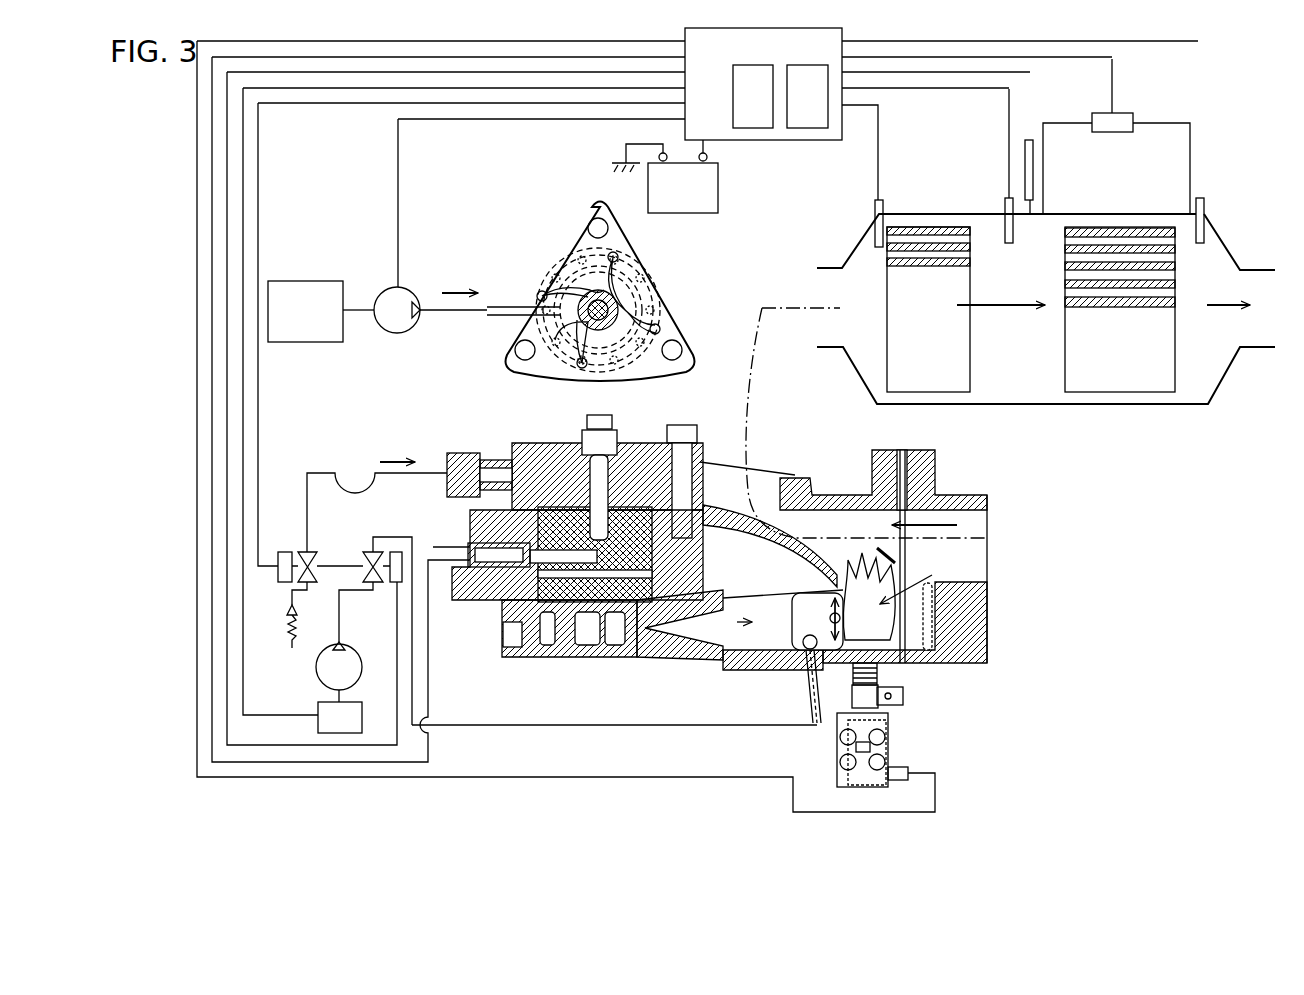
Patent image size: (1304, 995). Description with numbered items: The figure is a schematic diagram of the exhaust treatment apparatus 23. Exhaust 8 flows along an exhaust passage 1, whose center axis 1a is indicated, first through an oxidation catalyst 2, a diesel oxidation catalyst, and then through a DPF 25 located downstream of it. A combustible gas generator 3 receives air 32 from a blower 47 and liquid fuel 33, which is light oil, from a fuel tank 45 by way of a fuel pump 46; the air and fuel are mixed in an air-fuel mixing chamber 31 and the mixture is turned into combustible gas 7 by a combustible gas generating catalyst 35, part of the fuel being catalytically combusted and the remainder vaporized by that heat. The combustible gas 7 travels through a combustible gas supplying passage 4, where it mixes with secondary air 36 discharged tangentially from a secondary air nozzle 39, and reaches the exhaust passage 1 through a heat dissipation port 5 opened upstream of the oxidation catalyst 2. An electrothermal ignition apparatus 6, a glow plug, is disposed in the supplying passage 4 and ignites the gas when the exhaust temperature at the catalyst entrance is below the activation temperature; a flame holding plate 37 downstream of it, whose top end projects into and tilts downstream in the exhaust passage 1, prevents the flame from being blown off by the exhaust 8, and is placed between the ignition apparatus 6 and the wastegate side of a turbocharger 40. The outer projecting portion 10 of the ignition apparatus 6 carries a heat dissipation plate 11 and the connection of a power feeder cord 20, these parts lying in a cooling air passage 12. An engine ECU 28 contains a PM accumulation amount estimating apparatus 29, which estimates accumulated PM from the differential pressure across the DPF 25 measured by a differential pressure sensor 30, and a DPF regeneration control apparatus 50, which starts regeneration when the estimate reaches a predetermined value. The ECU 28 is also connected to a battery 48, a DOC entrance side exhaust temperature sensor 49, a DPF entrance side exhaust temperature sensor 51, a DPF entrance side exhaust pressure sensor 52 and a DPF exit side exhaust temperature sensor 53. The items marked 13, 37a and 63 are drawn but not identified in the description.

The exhaust passage 1 is at (1046, 362).
The center axis of the exhaust passage 1a is at (988, 540).
The oxidation catalyst 2 is at (926, 380).
The combustible gas generator 3 is at (510, 435).
The combustible gas supplying passage 4 is at (762, 655).
The heat dissipation port 5 is at (842, 578).
The electrothermal ignition apparatus 6 is at (916, 578).
The combustible gas 7 is at (840, 595).
The exhaust 8 is at (1005, 315).
The outer projecting portion 10 is at (890, 735).
The heat dissipation plate 11 is at (835, 750).
The cooling air passage 12 is at (1003, 752).
The glow plug 13 is at (888, 681).
The power feeder cord 20 is at (935, 800).
The exhaust treatment apparatus 23 is at (638, 665).
The DPF 25 is at (1126, 375).
The engine ECU 28 is at (822, 84).
The PM accumulation amount estimating apparatus 29 is at (745, 88).
The differential pressure sensor 30 is at (1114, 128).
The air-fuel mixing chamber 31 is at (590, 290).
The air 32 is at (400, 448).
The liquid fuel 33 is at (465, 290).
The combustible gas generating catalyst 35 is at (632, 562).
The secondary air 36 is at (808, 593).
The flame holding plate 37 is at (906, 560).
The fuel injection port 37a is at (877, 548).
The secondary air nozzle 39 is at (806, 665).
The turbocharger 40 is at (975, 665).
The fuel tank 45 is at (292, 340).
The fuel pump 46 is at (405, 328).
The blower 47 is at (318, 668).
The battery 48 is at (690, 200).
The DOC entrance side exhaust temperature sensor 49 is at (873, 214).
The DPF regeneration control apparatus 50 is at (805, 82).
The DPF entrance side exhaust temperature sensor 51 is at (1004, 207).
The DPF entrance side exhaust pressure sensor 52 is at (1024, 165).
The DPF exit side exhaust temperature sensor 53 is at (1205, 210).
The filter housing 63 is at (1170, 406).